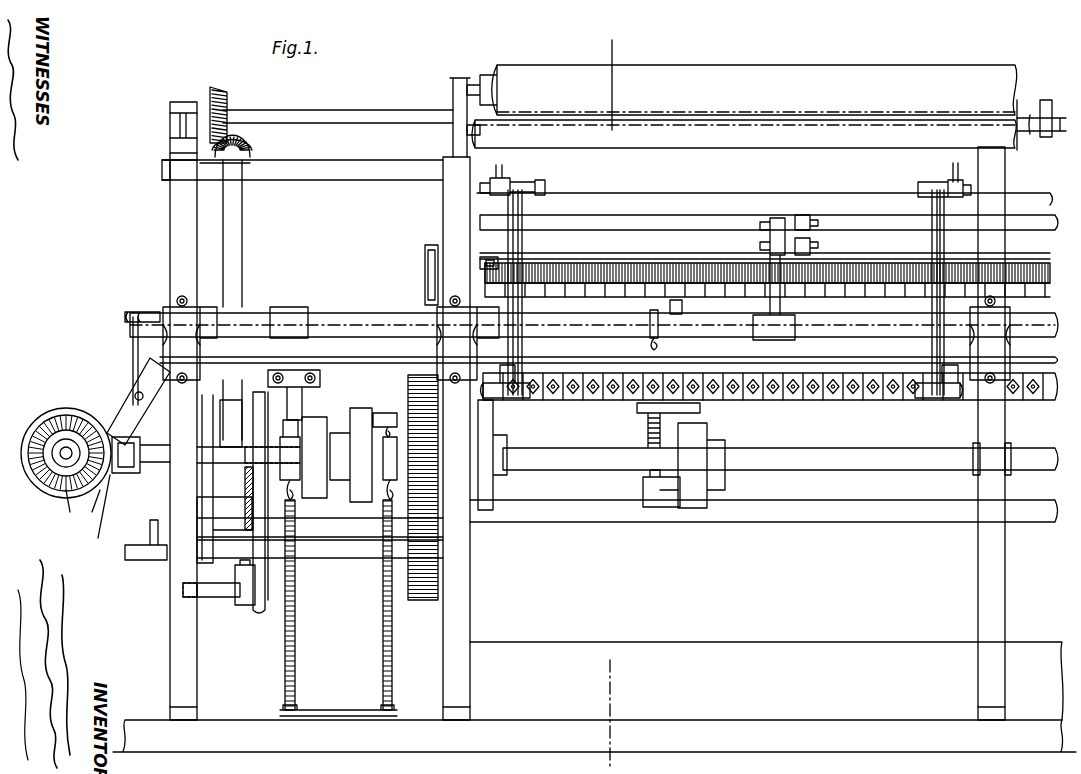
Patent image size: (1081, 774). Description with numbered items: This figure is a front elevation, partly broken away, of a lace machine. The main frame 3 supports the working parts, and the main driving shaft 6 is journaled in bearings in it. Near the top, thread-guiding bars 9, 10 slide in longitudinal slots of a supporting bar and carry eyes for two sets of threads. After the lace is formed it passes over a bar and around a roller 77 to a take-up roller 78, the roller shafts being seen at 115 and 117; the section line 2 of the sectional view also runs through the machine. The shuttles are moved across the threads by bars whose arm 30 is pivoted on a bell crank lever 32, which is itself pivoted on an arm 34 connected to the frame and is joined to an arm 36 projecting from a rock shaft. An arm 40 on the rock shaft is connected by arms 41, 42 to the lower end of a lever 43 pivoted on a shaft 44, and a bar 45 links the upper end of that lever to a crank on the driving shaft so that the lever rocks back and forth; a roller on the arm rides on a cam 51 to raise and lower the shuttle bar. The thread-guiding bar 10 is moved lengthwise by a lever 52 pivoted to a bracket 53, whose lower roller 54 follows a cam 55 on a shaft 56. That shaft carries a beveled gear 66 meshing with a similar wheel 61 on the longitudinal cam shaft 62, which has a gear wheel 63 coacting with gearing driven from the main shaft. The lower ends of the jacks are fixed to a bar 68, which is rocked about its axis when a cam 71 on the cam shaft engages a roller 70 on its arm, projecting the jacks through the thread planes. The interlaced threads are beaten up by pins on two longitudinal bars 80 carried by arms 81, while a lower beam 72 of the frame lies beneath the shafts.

The section line 2 is at (613, 74).
The main frame 3 is at (170, 620).
The main driving shaft 6 is at (343, 512).
The thread-guiding bar 9 is at (342, 318).
The thread-guiding bar 10 is at (155, 312).
The arm 30 is at (496, 258).
The bell crank lever 32 is at (518, 241).
The arm 34 is at (507, 172).
The arm 36 is at (505, 398).
The arm 40 is at (300, 383).
The arm 41 is at (216, 597).
The arm 42 is at (256, 605).
The lever 43 is at (236, 600).
The shaft 44 is at (315, 558).
The bar 45 is at (155, 560).
The cam 51 is at (425, 274).
The lever 52 is at (133, 338).
The bracket 53 is at (118, 405).
The roller 54 is at (96, 516).
The cam 55 is at (60, 510).
The shaft 56 is at (60, 447).
The beveled gear wheel 61 is at (87, 510).
The cam shaft 62 is at (575, 458).
The gear wheel 63 is at (440, 545).
The gear wheel 66 is at (421, 602).
The bar 68 is at (783, 400).
The roller 70 is at (676, 512).
The cam 71 is at (712, 495).
The lower beam 72 is at (801, 650).
The roller 77 is at (572, 140).
The take-up roller 78 is at (524, 74).
The longitudinal bars 80 is at (660, 218).
The arms 81 is at (770, 234).
The roller shaft 115 is at (1044, 106).
The shaft extension 117 is at (408, 116).